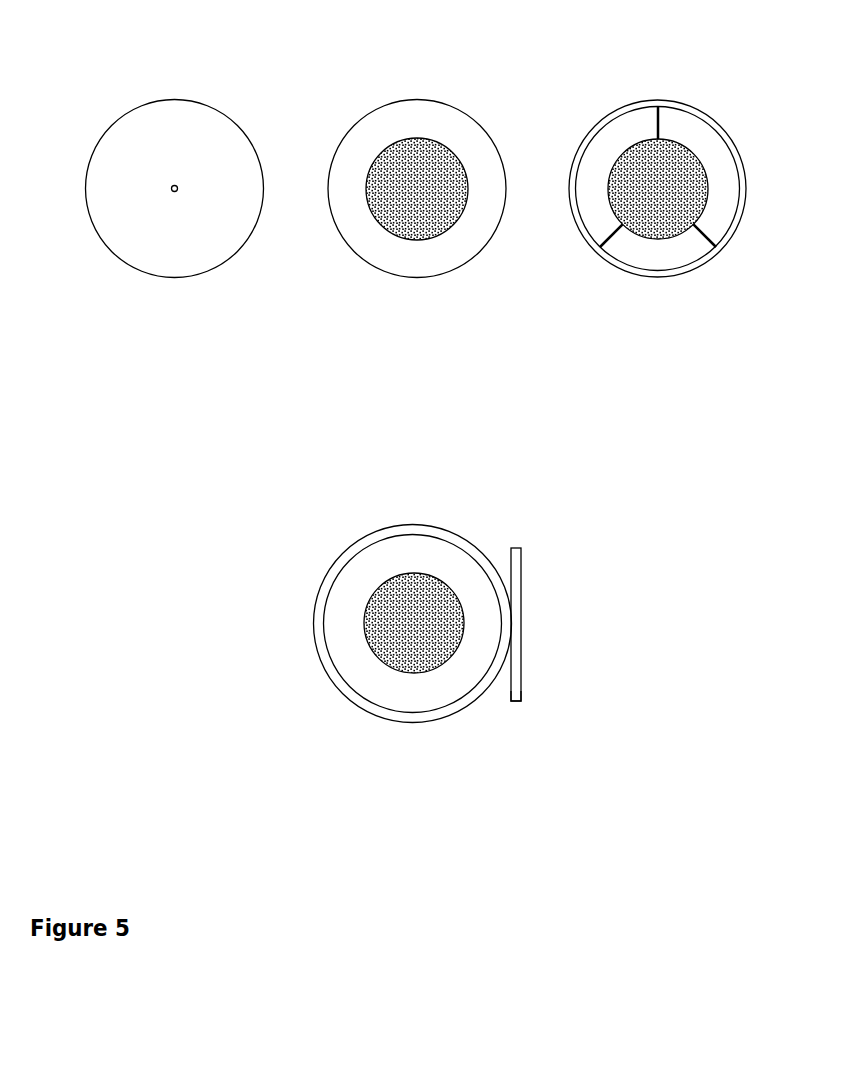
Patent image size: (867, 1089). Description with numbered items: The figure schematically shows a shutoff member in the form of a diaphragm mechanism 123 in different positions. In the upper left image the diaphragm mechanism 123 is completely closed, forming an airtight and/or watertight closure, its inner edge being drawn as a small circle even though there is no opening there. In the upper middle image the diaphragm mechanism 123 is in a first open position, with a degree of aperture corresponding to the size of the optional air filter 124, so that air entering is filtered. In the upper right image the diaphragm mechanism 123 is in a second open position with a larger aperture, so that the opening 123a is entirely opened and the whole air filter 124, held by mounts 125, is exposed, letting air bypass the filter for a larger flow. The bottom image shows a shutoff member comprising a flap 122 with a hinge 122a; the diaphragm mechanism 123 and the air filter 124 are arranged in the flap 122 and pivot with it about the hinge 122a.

The flap 122 is at (490, 560).
The hinge 122a is at (506, 693).
The diaphragm mechanism 123 is at (123, 121).
The opening 123a is at (686, 118).
The air filter 124 is at (390, 210).
The mounts 125 is at (691, 225).